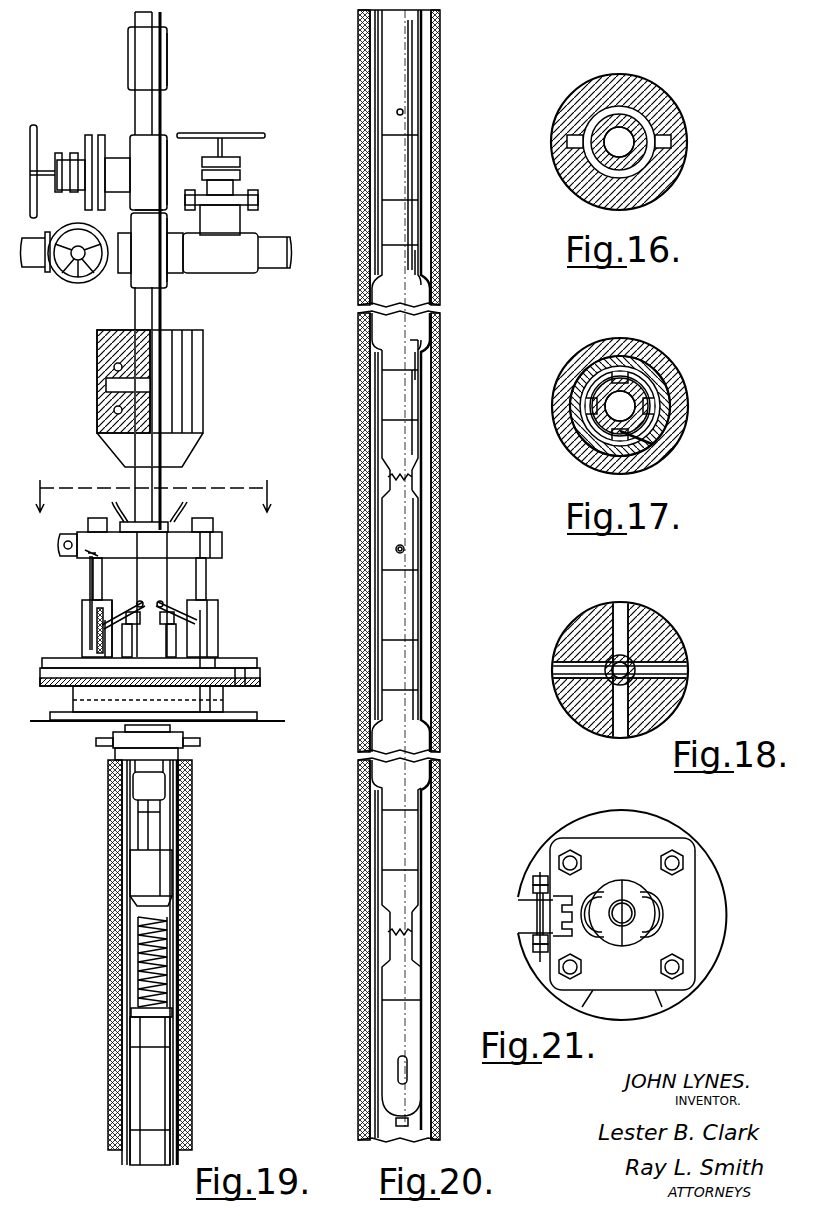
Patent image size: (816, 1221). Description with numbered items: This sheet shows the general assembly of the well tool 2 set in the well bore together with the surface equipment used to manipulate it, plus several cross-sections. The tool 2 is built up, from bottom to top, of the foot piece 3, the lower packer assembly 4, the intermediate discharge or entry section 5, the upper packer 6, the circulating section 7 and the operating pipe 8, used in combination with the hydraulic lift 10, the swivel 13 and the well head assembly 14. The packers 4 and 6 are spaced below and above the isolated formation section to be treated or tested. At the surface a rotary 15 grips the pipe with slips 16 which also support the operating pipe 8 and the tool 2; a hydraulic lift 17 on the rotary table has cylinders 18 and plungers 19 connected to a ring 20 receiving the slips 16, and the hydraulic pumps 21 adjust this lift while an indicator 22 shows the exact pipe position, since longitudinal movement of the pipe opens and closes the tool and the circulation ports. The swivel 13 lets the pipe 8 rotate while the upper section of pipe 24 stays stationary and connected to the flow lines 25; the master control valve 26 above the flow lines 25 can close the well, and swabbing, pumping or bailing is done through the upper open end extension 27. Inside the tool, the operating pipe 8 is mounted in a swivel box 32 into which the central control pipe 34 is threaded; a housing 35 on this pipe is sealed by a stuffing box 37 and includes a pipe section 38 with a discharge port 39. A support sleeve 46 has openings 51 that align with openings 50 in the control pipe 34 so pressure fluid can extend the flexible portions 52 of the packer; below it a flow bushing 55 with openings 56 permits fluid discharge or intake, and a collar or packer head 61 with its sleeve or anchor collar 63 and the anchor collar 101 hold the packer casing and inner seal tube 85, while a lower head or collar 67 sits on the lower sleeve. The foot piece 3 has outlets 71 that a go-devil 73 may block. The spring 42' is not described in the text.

In FIG. 20, the tool 2 is at (408, 523).
In FIG. 20, the foot piece 3 is at (400, 1005).
In FIG. 18, the foot piece 3 is at (665, 623).
In FIG. 20, the lower packer assembly 4 is at (414, 775).
In FIG. 20, the intermediate discharge or entry section 5 is at (414, 560).
In FIG. 20, the upper packer 6 is at (419, 334).
In FIG. 19, the circulating section 7 is at (165, 1072).
In FIG. 20, the circulating section 7 is at (394, 98).
In FIG. 19, the operating pipe 8 is at (150, 828).
In FIG. 19, the hydraulic lift 10 is at (212, 610).
In FIG. 19, the swivel 13 is at (180, 398).
In FIG. 19, the well head assembly 14 is at (145, 272).
In FIG. 19, the rotary 15 is at (250, 660).
In FIG. 21, the rotary 15 is at (712, 893).
In FIG. 19, the slips 16 is at (178, 520).
In FIG. 21, the slips 16 is at (643, 918).
In FIG. 19, the hydraulic lift 17 is at (82, 638).
In FIG. 19, the cylinders 18 is at (213, 638).
In FIG. 19, the plungers 19 is at (206, 575).
In FIG. 21, the plungers 19 is at (676, 970).
In FIG. 19, the ring 20 is at (222, 545).
In FIG. 21, the ring 20 is at (606, 914).
In FIG. 19, the hydraulic pumps 21 is at (52, 700).
In FIG. 19, the indicator 22 is at (90, 630).
In FIG. 19, the upper section of pipe 24 is at (163, 303).
In FIG. 21, the upper section of pipe 24 is at (624, 900).
In FIG. 19, the flow lines 25 is at (38, 272).
In FIG. 19, the master control valve 26 is at (153, 148).
In FIG. 19, the upper open end extension 27 is at (158, 78).
In FIG. 19, the swivel box 32 is at (170, 872).
In FIG. 16, the central control pipe 34 is at (640, 128).
In FIG. 17, the central control pipe 34 is at (640, 387).
In FIG. 19, the housing 35 is at (140, 1068).
In FIG. 16, the housing 35 is at (670, 180).
In FIG. 19, the stuffing box 37 is at (170, 1010).
In FIG. 19, the pipe section 38 is at (178, 1140).
In FIG. 20, the pipe section 38 is at (418, 78).
In FIG. 20, the discharge port 39 is at (403, 114).
In FIG. 19, the spring 42' is at (188, 960).
In FIG. 20, the support sleeve 46 is at (412, 483).
In FIG. 17, the support sleeve 46 is at (646, 425).
In FIG. 17, the openings in control pipe 50 is at (655, 414).
In FIG. 17, the openings in support sleeve 51 is at (628, 441).
In FIG. 20, the flexible portions 52 is at (382, 323).
In FIG. 17, the flexible portions 52 is at (560, 412).
In FIG. 20, the flow bushing 55 is at (385, 535).
In FIG. 20, the openings in flow bushing 56 is at (404, 548).
In FIG. 20, the collar or packer head 61 is at (413, 170).
In FIG. 20, the sleeve or anchor collar 63 is at (409, 220).
In FIG. 20, the lower head or collar 67 is at (412, 450).
In FIG. 20, the outlets 71 is at (406, 1072).
In FIG. 18, the outlets 71 is at (680, 670).
In FIG. 18, the go-devil 73 is at (608, 678).
In FIG. 17, the inner seal tube 85 is at (575, 432).
In FIG. 20, the anchor collar 101 is at (416, 258).